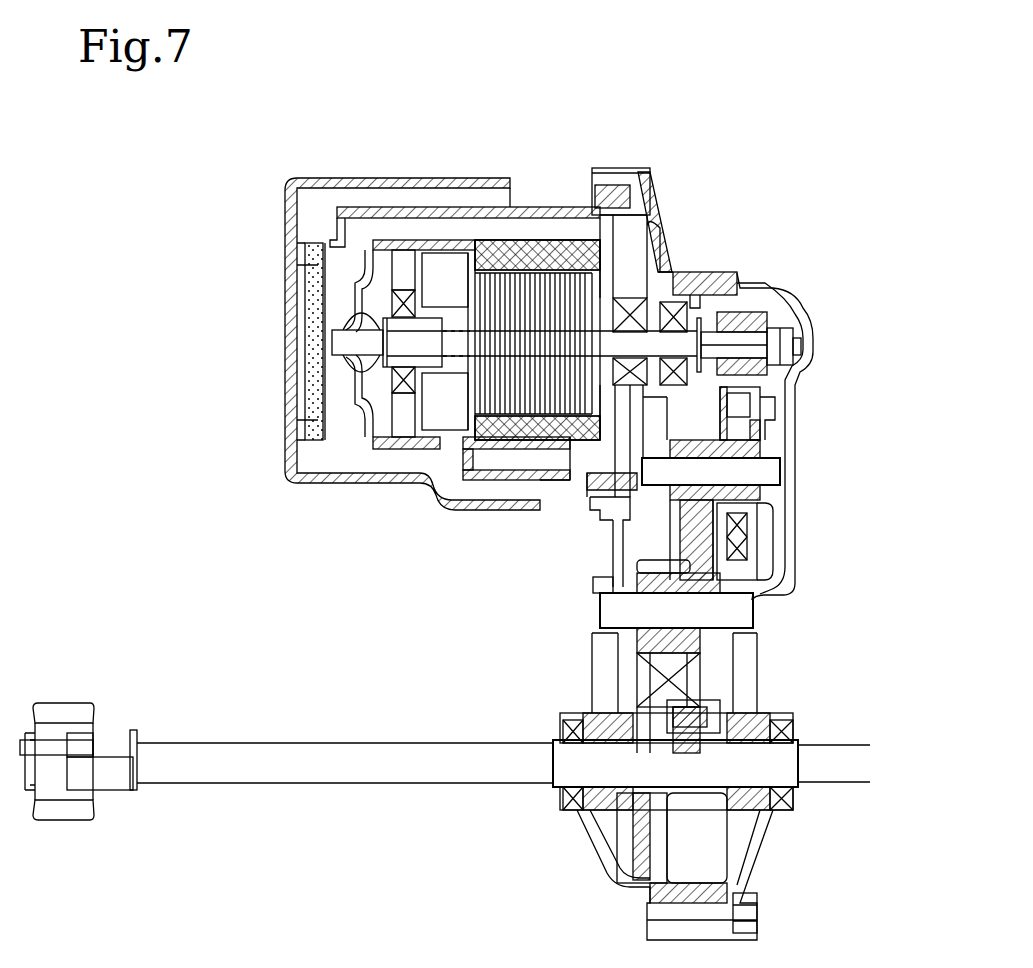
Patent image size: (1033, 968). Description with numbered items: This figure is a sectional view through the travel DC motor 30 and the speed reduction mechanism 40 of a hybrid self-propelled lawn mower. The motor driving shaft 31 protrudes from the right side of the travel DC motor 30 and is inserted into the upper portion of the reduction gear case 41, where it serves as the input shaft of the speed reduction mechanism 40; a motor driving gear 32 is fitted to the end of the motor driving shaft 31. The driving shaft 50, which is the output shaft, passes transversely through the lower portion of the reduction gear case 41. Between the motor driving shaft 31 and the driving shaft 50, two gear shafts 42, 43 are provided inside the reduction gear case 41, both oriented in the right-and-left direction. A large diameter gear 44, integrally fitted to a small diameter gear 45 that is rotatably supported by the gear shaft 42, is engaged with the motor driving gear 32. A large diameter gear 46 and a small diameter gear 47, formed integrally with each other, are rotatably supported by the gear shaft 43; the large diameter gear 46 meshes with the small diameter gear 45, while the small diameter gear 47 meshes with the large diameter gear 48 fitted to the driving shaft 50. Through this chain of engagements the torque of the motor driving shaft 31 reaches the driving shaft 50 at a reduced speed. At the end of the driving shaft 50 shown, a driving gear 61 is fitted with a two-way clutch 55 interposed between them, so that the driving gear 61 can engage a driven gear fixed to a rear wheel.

The travel DC motor 30 is at (505, 158).
The motor driving shaft 31 is at (657, 347).
The motor driving gear 32 is at (753, 312).
The speed reduction mechanism 40 is at (808, 558).
The reduction gear case 41 is at (793, 593).
The gear shaft 42 is at (770, 472).
The gear shaft 43 is at (610, 610).
The large diameter gear 44 is at (790, 390).
The small diameter gear 45 is at (612, 487).
The large diameter gear 46 is at (707, 713).
The small diameter gear 47 is at (630, 563).
The large diameter gear 48 is at (620, 873).
The driving shaft 50 is at (375, 787).
The two-way clutch 55 is at (97, 737).
The driving gear 61 is at (53, 820).